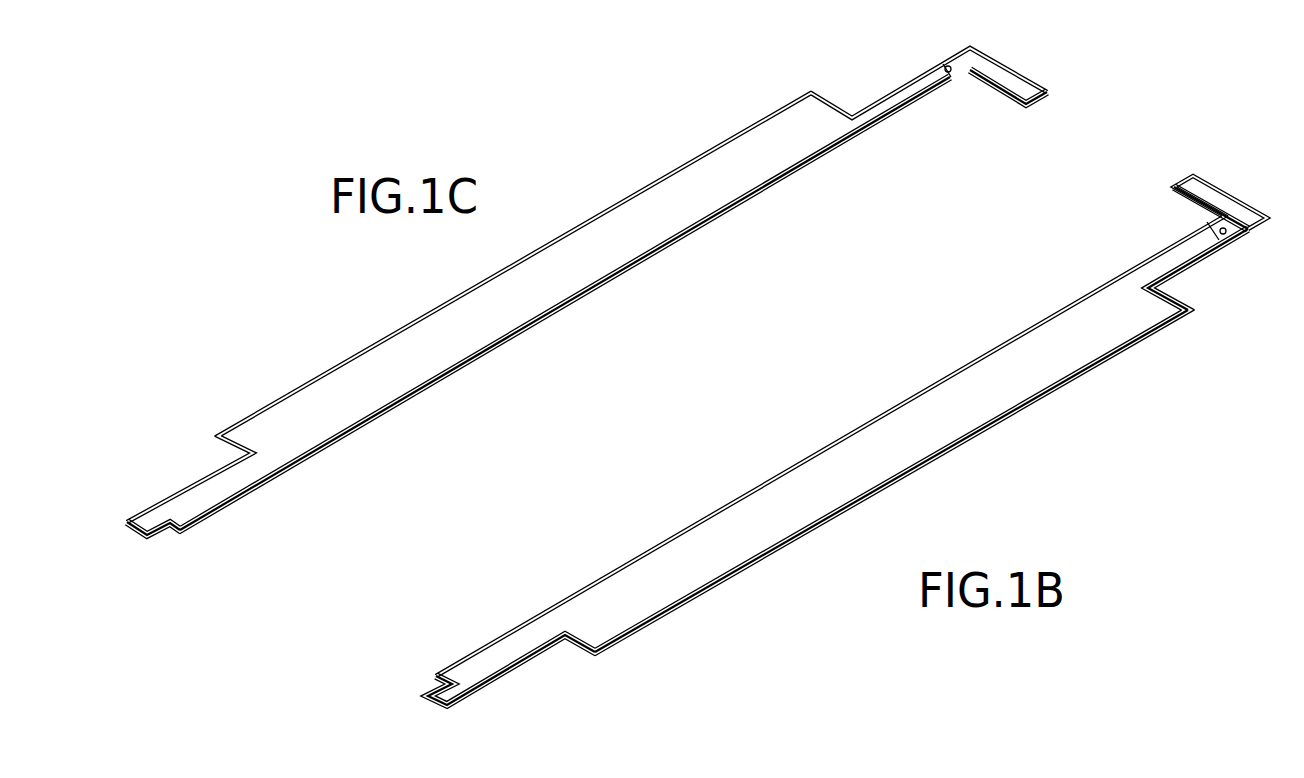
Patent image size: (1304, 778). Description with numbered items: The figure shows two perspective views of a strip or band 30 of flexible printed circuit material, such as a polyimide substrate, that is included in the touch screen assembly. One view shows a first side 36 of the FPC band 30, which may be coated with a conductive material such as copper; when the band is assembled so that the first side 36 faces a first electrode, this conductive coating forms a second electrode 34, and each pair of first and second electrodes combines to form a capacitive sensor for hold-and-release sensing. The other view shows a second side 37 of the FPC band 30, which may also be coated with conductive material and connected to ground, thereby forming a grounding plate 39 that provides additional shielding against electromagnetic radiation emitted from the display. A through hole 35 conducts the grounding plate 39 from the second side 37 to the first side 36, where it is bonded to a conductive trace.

In FIG. 1C, the FPC band 30 is at (258, 356).
In FIG. 1B, the FPC band 30 is at (722, 594).
In FIG. 1B, the second electrode 34 is at (1134, 326).
In FIG. 1C, the through hole 35 is at (949, 74).
In FIG. 1B, the through hole 35 is at (1208, 222).
In FIG. 1B, the first side 36 is at (500, 630).
In FIG. 1C, the second side 37 is at (148, 514).
In FIG. 1C, the grounding plate 39 is at (724, 155).